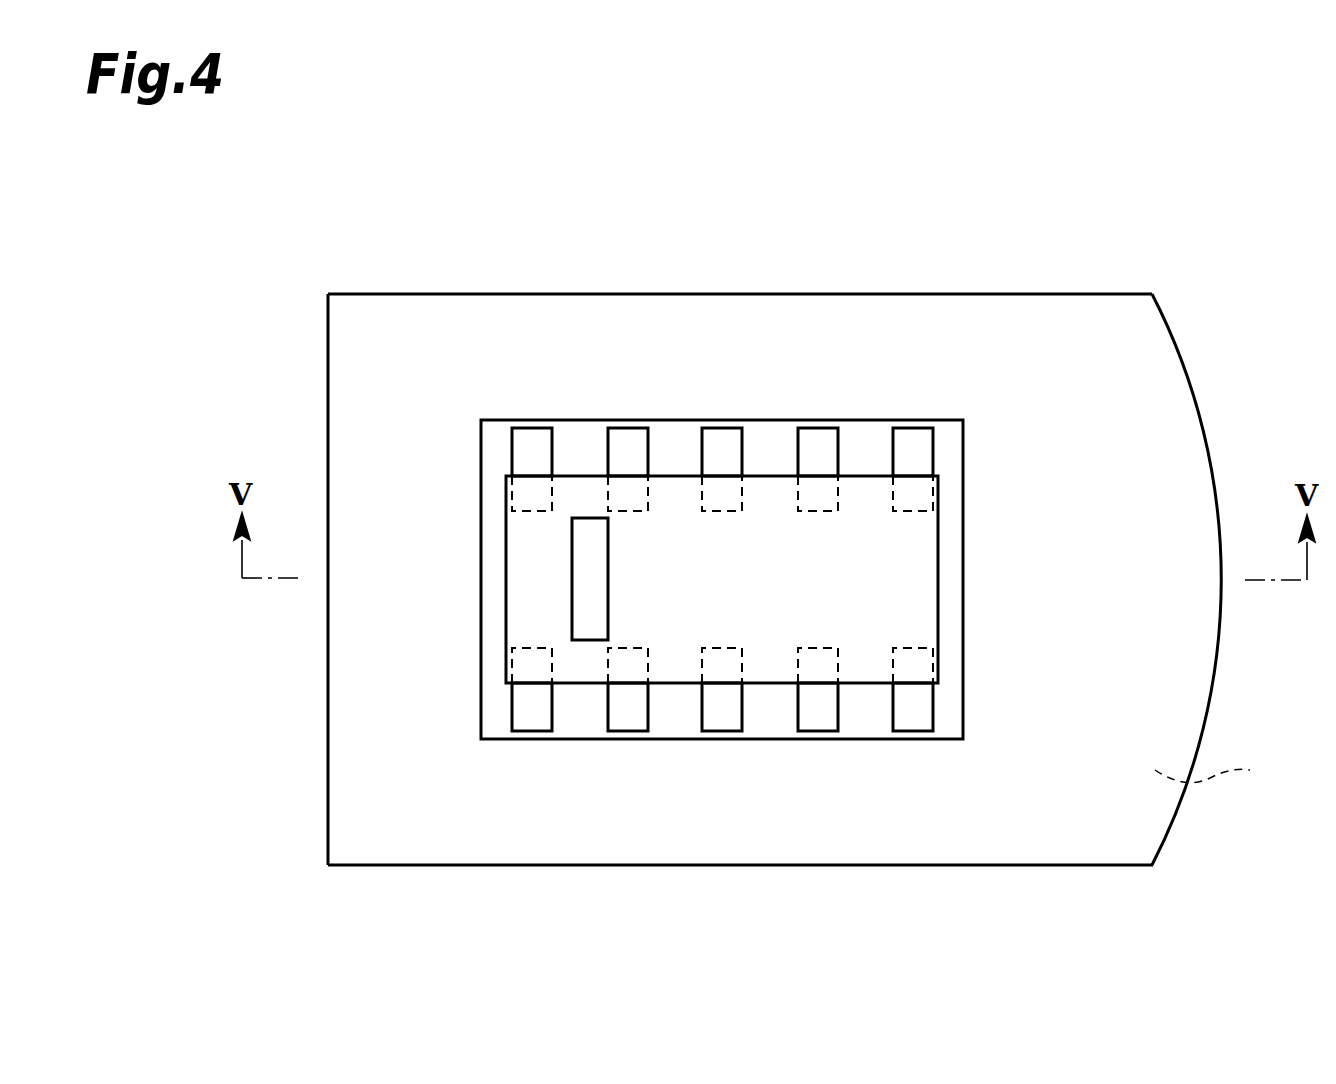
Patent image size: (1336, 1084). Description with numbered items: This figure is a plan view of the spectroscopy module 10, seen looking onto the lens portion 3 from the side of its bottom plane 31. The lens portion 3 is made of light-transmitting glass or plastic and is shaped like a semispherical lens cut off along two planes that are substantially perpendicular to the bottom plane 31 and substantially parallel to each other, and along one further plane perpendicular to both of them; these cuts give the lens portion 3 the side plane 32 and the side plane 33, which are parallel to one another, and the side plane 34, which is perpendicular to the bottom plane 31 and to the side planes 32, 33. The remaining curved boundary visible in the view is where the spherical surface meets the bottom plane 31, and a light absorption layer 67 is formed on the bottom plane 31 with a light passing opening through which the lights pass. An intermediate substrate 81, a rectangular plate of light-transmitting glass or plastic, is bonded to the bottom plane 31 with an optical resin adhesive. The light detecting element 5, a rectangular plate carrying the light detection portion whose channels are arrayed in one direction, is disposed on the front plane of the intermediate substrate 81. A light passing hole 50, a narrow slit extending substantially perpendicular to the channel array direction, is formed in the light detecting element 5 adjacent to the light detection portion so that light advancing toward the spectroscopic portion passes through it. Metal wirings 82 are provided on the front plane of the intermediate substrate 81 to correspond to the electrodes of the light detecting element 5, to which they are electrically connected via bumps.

The liquid ejecting head unit 10 is at (1198, 221).
The lens portion 3 is at (760, 580).
The bottom plane 31 is at (1224, 771).
The side plane 32 is at (702, 293).
The side plane 33 is at (705, 866).
The side plane 34 is at (327, 657).
The light absorption layer 67 is at (1162, 378).
The light detecting element 5 is at (915, 581).
The light passing hole 50 is at (572, 557).
The intermediate substrate 81 is at (481, 536).
The wirings 82 is at (627, 440).